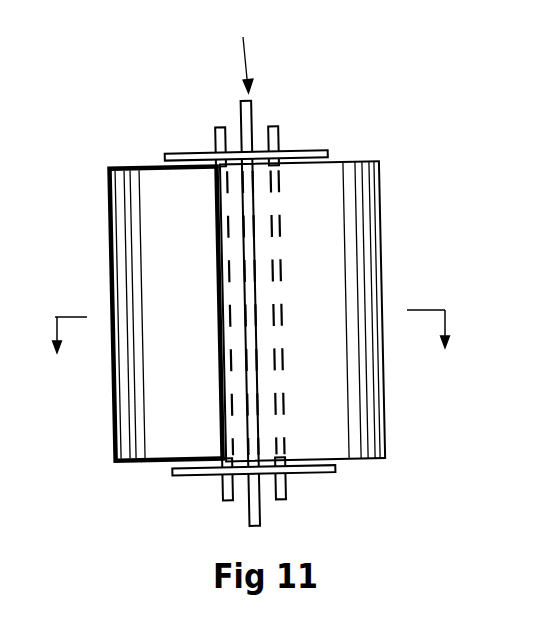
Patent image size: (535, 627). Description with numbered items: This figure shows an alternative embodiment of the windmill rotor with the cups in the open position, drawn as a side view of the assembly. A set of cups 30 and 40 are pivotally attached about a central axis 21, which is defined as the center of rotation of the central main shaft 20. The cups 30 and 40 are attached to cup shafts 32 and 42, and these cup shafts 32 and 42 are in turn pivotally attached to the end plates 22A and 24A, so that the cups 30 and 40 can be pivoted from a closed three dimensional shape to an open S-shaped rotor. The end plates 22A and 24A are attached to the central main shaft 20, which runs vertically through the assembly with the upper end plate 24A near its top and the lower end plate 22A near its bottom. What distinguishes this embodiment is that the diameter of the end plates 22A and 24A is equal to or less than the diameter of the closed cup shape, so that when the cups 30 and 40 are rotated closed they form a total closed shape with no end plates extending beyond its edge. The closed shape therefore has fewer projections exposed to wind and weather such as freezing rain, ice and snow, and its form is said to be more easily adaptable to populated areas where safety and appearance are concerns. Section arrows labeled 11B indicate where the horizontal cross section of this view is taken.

The central main shaft 20 is at (248, 508).
The central axis 21 is at (247, 51).
The end plate 22A is at (172, 476).
The end plate 24A is at (166, 155).
The cup 30 is at (111, 258).
The cup shaft 32 is at (217, 140).
The cup 40 is at (383, 244).
The cup shaft 42 is at (281, 138).
The section line 11B is at (254, 346).